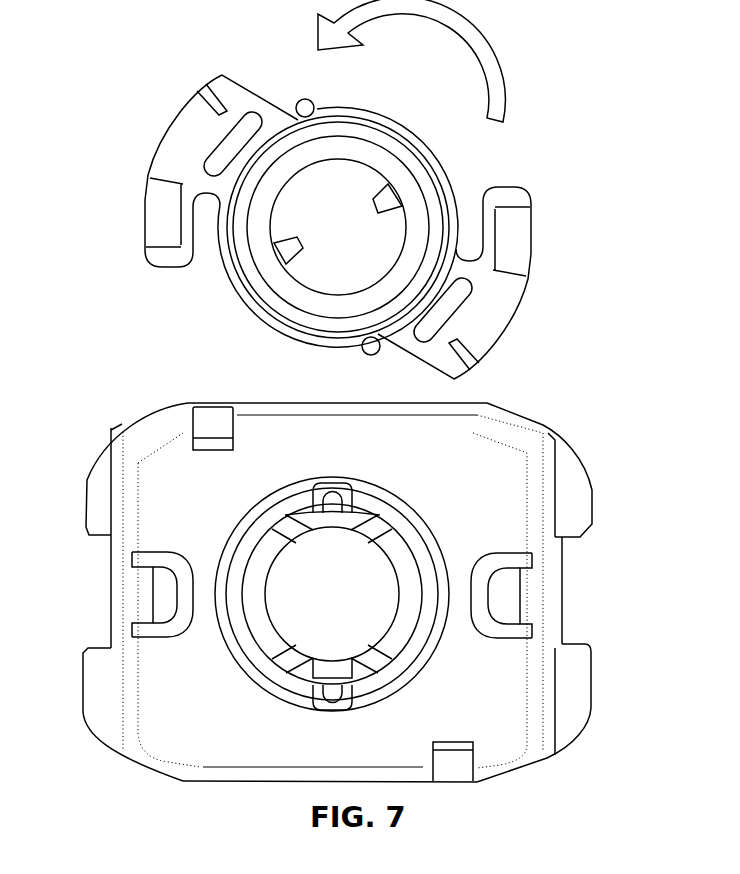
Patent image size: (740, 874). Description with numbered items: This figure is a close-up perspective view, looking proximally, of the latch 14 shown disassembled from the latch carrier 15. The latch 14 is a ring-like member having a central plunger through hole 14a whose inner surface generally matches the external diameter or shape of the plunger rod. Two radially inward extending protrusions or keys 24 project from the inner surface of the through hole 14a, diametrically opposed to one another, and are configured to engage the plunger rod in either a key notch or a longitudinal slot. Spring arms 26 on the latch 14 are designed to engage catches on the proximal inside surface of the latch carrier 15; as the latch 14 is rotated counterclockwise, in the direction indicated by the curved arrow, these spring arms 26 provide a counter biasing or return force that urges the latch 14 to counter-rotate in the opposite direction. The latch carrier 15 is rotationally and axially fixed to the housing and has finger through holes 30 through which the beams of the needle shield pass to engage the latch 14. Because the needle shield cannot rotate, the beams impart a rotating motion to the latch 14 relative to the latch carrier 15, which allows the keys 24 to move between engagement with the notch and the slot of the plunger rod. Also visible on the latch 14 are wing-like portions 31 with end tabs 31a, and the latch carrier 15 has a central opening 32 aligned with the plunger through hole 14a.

The latch 14 is at (314, 227).
The plunger through hole 14a is at (357, 272).
The latch carrier 15 is at (568, 478).
The key 24 is at (299, 248).
The spring arm 26 is at (446, 181).
The finger through hole 30 is at (167, 592).
The arm 31 is at (155, 218).
The arm end portion 31a is at (165, 258).
The opening 32 is at (327, 593).